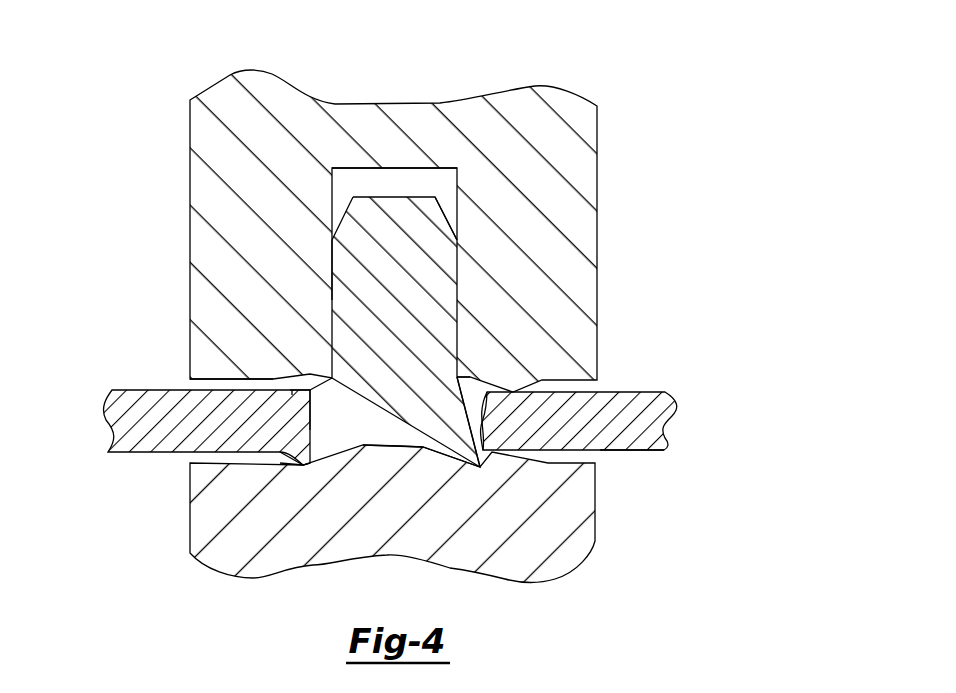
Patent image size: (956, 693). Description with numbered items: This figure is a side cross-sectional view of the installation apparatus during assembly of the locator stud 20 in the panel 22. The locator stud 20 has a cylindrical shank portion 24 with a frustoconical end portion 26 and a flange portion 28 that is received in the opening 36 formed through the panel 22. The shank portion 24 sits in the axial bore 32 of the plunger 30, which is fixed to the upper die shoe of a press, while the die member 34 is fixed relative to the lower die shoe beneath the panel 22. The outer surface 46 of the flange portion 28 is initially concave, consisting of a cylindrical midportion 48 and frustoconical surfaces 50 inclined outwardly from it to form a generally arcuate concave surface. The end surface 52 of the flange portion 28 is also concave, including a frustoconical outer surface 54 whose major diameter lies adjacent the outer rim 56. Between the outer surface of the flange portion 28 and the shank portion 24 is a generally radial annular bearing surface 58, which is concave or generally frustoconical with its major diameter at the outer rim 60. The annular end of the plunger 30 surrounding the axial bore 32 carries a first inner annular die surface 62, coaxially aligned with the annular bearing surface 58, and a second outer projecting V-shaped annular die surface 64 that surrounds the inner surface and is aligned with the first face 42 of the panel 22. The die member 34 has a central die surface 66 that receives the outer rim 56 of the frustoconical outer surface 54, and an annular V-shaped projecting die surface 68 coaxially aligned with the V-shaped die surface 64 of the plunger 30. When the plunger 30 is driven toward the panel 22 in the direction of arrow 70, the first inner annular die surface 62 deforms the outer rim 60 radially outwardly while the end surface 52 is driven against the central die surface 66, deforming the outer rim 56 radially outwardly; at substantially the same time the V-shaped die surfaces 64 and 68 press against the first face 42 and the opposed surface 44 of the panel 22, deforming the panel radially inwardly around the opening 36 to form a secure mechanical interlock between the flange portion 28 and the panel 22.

The locator stud 20 is at (497, 281).
The panel 22 is at (110, 431).
The shank portion 24 is at (332, 244).
The frustoconical end portion 26 is at (443, 217).
The flange portion 28 is at (303, 463).
The plunger 30 is at (589, 178).
The axial bore 32 is at (334, 197).
The die member 34 is at (583, 540).
The opening 36 is at (473, 428).
The first face 42 is at (623, 392).
The opposed surface 44 is at (638, 455).
The outer surface 46 is at (491, 408).
The cylindrical midportion 48 is at (306, 428).
The frustoconical surfaces 50 is at (292, 395).
The end surface 52 is at (420, 460).
The frustoconical outer surface 54 is at (452, 460).
The outer rim 56 is at (298, 440).
The annular bearing surface 58 is at (463, 377).
The outer rim 60 is at (310, 405).
The first inner annular die surface 62 is at (322, 382).
The second outer projecting V-shaped annular die surface 64 is at (273, 392).
The central die surface 66 is at (381, 465).
The annular V-shaped projecting die surface 68 is at (282, 437).
The arrow 70 is at (140, 282).